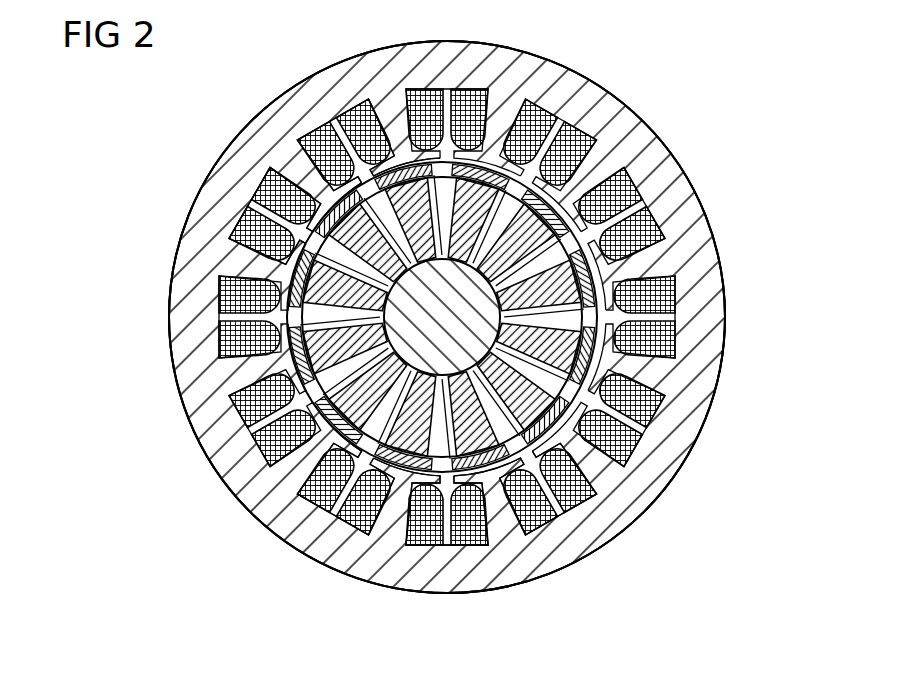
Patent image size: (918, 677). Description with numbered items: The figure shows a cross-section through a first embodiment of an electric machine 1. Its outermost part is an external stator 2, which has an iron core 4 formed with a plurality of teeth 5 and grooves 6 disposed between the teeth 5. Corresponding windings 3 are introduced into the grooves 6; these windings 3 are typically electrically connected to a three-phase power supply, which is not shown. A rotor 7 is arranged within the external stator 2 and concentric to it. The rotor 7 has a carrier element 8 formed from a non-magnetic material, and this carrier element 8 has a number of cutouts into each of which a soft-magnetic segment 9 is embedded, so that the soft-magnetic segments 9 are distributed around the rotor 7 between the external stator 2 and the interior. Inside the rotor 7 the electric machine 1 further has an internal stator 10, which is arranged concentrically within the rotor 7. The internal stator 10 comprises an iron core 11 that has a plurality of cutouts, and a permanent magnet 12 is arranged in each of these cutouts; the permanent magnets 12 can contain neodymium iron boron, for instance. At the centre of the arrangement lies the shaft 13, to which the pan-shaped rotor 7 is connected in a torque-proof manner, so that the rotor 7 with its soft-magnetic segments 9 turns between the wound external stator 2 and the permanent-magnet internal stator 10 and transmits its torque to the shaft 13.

The electric machine 1 is at (258, 94).
The external stator 2 is at (582, 106).
The windings 3 is at (468, 97).
The iron core 4 is at (442, 63).
The teeth 5 is at (287, 158).
The grooves 6 is at (375, 113).
The rotor 7 is at (498, 475).
The carrier element 8 is at (410, 462).
The soft-magnetic segments 9 is at (447, 476).
The internal stator 10 is at (312, 455).
The iron core 11 is at (512, 427).
The permanent magnet 12 is at (313, 352).
The shaft 13 is at (483, 302).